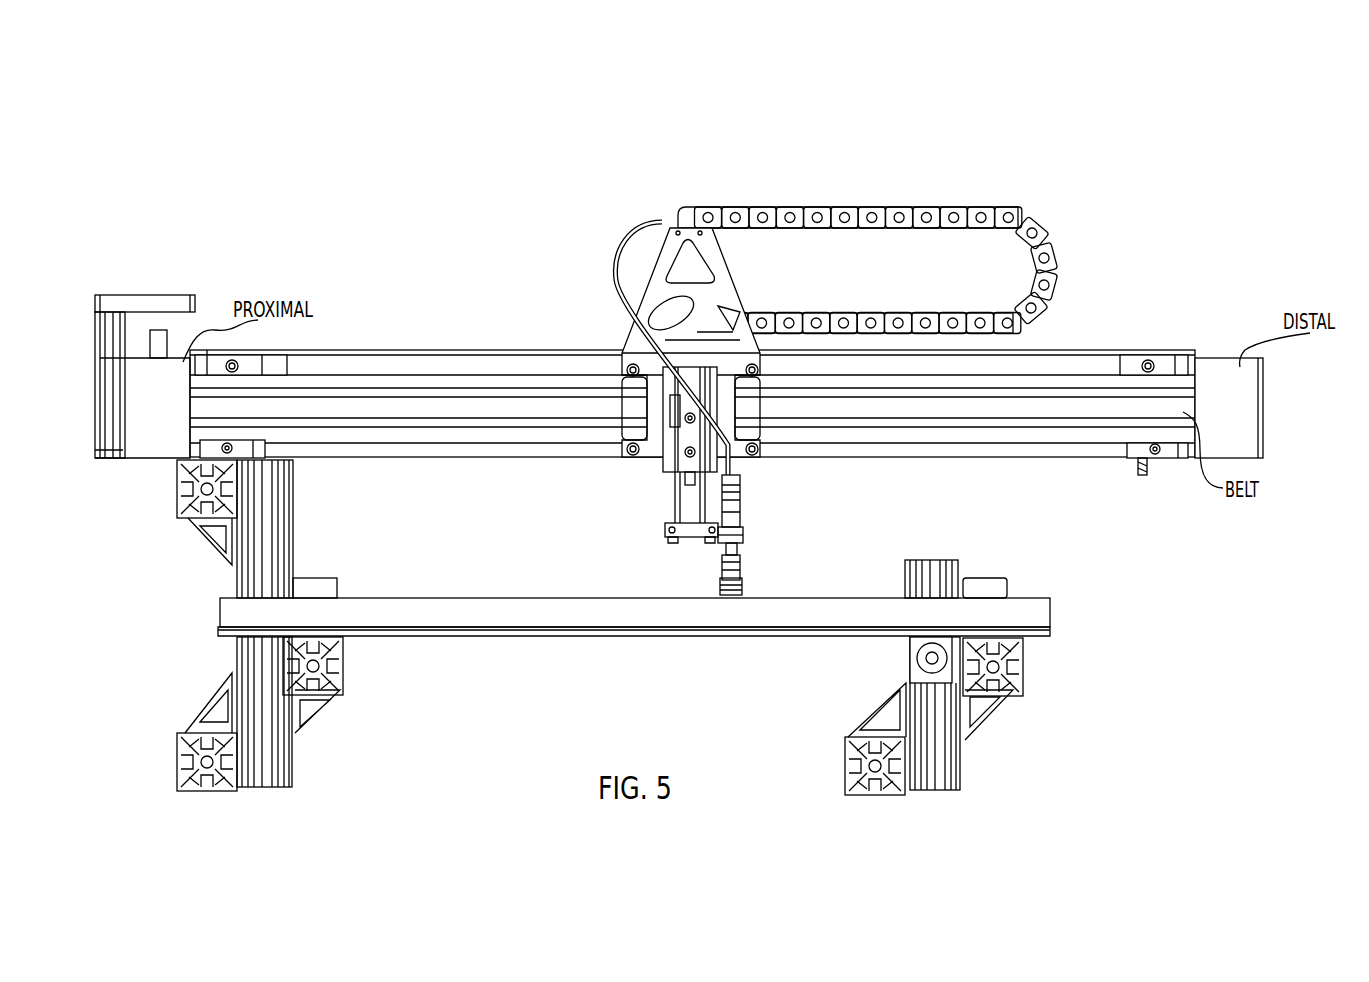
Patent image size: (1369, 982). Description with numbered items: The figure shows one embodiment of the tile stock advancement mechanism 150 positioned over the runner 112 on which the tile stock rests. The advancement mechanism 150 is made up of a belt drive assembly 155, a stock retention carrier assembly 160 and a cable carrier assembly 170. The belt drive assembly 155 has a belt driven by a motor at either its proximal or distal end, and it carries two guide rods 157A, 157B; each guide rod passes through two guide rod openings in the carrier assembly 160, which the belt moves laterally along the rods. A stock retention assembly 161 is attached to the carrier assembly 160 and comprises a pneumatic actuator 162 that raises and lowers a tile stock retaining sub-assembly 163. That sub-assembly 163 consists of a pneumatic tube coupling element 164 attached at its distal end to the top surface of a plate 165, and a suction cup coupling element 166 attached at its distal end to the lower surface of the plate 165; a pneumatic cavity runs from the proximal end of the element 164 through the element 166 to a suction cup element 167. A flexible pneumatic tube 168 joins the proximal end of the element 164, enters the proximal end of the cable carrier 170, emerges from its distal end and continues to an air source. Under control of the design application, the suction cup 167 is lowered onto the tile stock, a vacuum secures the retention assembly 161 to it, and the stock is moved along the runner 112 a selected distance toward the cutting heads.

The tile stock advancement mechanism 150 is at (636, 122).
The runner 112 is at (1052, 617).
The belt drive assembly 155 is at (1247, 397).
The guide rod 157A is at (1058, 390).
The guide rod 157B is at (1048, 423).
The stock retention carrier assembly 160 is at (622, 340).
The stock retention assembly 161 is at (658, 462).
The pneumatic actuator 162 is at (672, 477).
The tile stock retaining sub-assembly 163 is at (678, 510).
The pneumatic tube coupling element 164 is at (740, 516).
The plate 165 is at (743, 537).
The suction cup coupling element 166 is at (723, 563).
The suction cup element 167 is at (743, 581).
The flexible pneumatic tube 168 is at (645, 220).
The cable carrier assembly 170 is at (1034, 219).